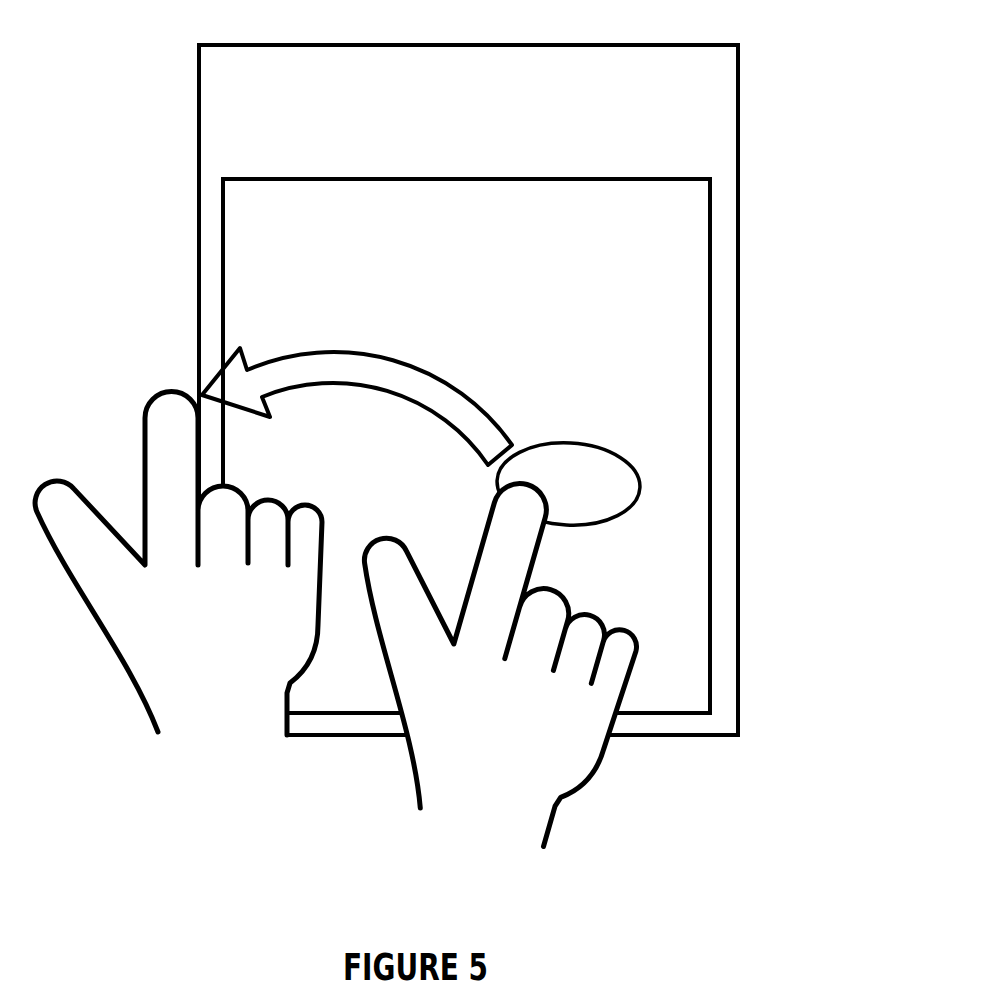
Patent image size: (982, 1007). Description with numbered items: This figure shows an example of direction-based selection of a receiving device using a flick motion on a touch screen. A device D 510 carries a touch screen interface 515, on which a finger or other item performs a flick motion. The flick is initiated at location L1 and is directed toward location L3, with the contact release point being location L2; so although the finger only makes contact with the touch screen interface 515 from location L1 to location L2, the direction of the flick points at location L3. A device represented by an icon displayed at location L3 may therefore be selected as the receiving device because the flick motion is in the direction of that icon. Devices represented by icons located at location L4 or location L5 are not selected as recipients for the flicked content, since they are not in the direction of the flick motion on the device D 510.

The device D 510 is at (447, 145).
The touch screen interface 515 is at (447, 246).
The location L1 is at (568, 483).
The location L2 is at (357, 406).
The location L3 is at (267, 315).
The location L4 is at (617, 303).
The location L5 is at (642, 573).